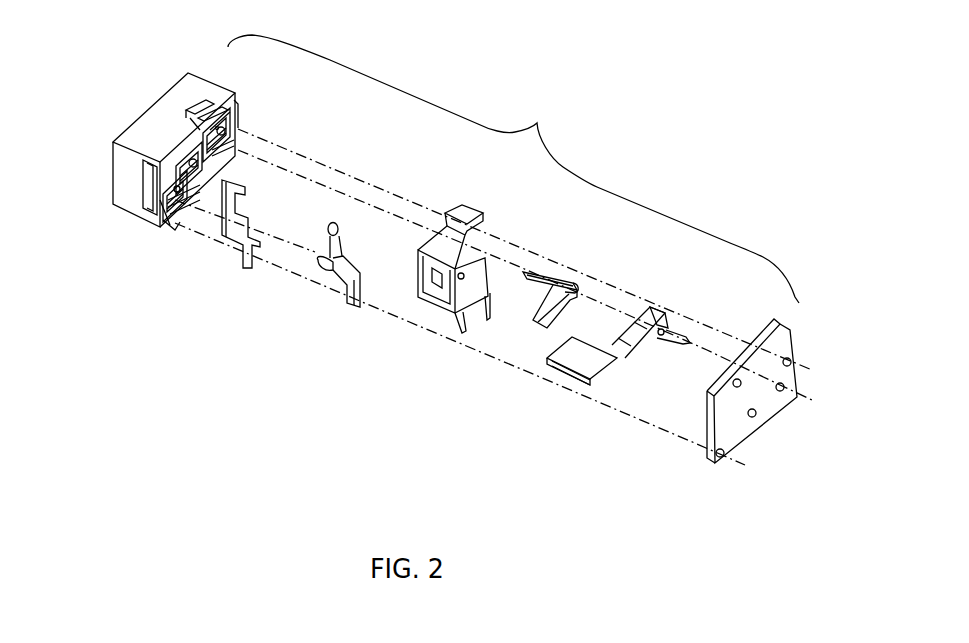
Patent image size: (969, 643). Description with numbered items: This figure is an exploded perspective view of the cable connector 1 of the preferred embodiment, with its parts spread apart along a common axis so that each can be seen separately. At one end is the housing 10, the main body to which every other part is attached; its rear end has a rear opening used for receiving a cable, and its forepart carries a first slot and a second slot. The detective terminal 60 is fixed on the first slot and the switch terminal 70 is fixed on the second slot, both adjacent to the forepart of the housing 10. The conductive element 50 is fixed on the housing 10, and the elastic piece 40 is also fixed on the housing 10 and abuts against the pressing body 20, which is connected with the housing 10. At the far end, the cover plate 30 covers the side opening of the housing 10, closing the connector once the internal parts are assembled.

The cable connector 1 is at (513, 169).
The housing 10 is at (125, 200).
The pressing body 20 is at (676, 324).
The cover plate 30 is at (733, 423).
The elastic piece 40 is at (560, 277).
The conductive element 50 is at (488, 270).
The detective terminal 60 is at (232, 228).
The switch terminal 70 is at (342, 275).